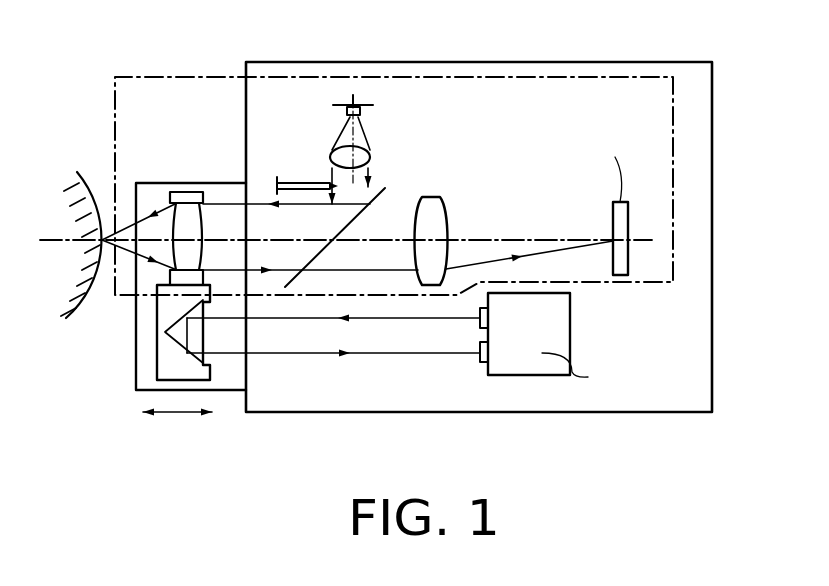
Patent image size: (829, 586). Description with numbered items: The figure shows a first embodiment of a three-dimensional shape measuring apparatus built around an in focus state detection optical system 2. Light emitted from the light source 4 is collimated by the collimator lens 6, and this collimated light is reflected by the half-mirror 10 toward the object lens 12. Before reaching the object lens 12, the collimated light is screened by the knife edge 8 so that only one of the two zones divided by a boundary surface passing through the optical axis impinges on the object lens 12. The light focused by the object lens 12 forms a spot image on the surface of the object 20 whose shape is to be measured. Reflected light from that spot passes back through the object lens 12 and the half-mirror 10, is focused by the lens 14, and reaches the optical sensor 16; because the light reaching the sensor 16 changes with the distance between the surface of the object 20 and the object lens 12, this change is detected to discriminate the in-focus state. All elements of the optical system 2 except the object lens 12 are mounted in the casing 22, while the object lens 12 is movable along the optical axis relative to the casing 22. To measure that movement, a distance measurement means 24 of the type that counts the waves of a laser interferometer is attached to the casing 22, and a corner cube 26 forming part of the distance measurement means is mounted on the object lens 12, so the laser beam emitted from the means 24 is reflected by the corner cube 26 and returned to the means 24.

The in focus state detection optical system 2 is at (230, 72).
The light source 4 is at (360, 113).
The collimator lens 6 is at (373, 157).
The knife edge 8 is at (297, 181).
The half-mirror 10 is at (384, 192).
The object lens 12 is at (200, 220).
The lens 14 is at (447, 217).
The optical sensor 16 is at (613, 212).
The object 20 is at (71, 318).
The casing 22 is at (637, 400).
The distance measurement means 24 is at (530, 368).
The corner cube 26 is at (165, 362).